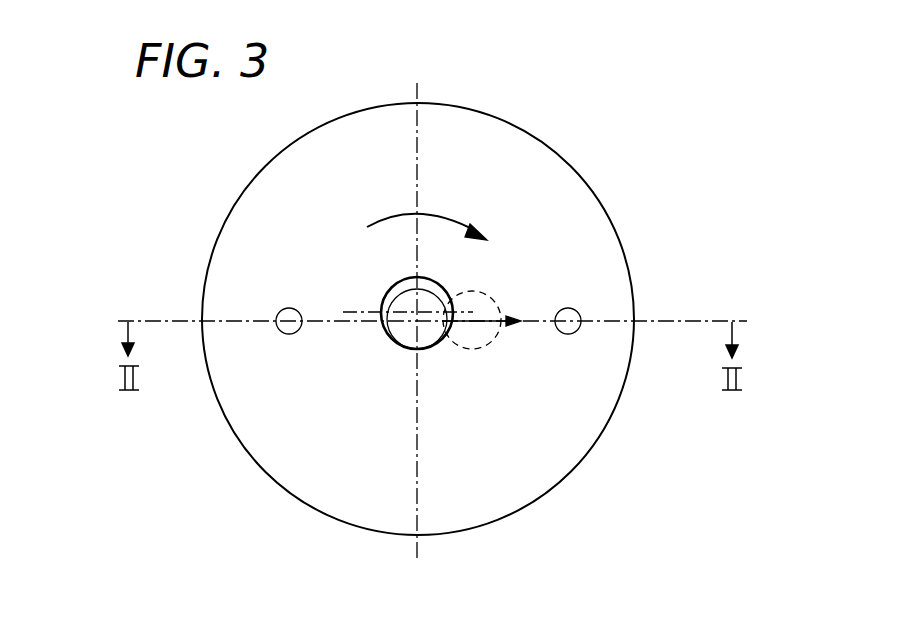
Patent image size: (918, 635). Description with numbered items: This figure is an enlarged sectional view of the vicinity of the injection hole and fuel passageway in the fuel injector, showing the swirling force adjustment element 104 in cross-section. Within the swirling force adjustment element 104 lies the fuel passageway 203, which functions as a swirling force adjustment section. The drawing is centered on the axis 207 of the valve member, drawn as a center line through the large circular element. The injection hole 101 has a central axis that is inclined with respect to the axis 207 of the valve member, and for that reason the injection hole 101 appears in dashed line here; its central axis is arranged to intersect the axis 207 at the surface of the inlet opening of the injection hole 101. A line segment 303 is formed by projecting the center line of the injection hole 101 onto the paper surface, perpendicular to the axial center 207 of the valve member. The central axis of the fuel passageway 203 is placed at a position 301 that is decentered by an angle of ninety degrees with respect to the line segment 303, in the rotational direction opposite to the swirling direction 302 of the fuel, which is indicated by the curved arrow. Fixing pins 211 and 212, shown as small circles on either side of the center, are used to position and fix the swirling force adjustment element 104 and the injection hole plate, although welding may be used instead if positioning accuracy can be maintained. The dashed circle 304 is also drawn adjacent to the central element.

The swirling force adjustment element 104 is at (552, 213).
The swirling direction 302 is at (453, 217).
The fuel passageway 203 is at (405, 283).
The position 301 is at (417, 313).
The axis of the valve member 207 is at (417, 321).
The displaced ring position 304 is at (490, 320).
The line segment 303 is at (543, 319).
The fixing pin 212 is at (278, 325).
The fixing pin 211 is at (580, 328).
The injection hole 101 is at (445, 347).